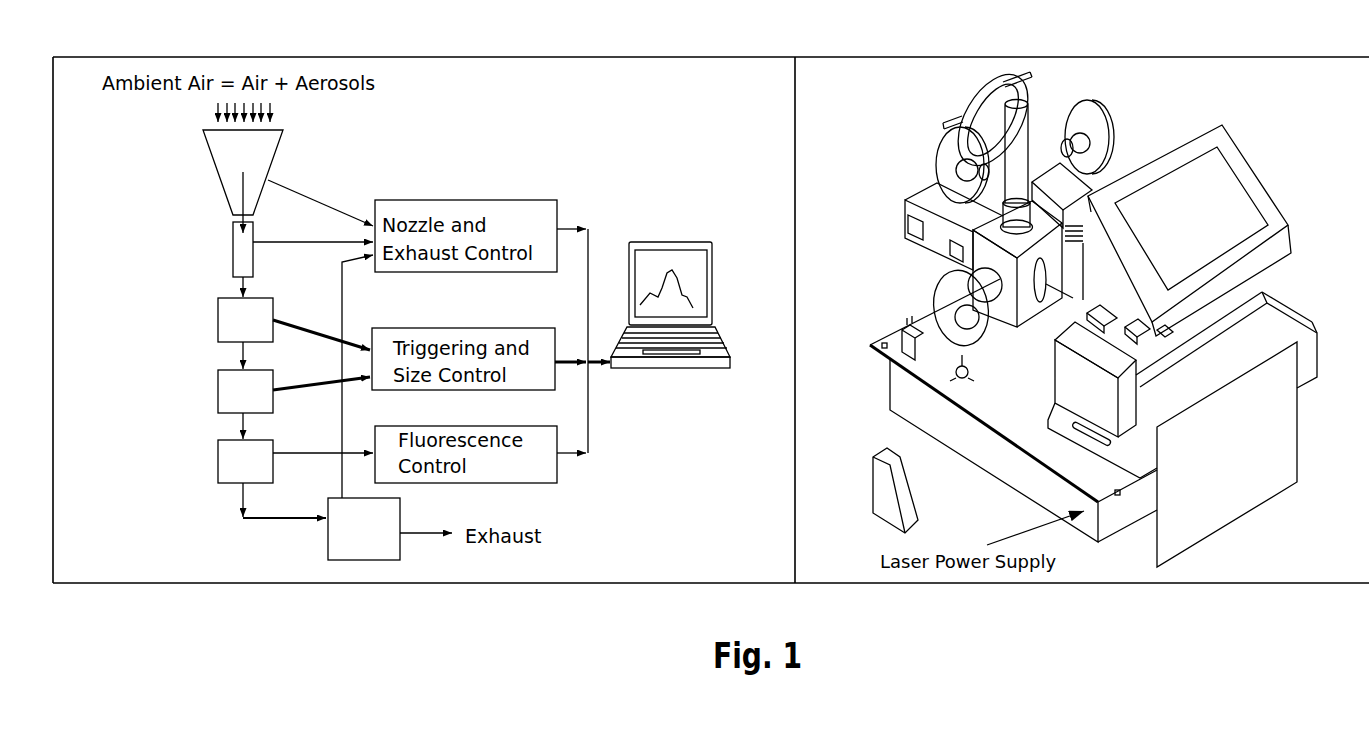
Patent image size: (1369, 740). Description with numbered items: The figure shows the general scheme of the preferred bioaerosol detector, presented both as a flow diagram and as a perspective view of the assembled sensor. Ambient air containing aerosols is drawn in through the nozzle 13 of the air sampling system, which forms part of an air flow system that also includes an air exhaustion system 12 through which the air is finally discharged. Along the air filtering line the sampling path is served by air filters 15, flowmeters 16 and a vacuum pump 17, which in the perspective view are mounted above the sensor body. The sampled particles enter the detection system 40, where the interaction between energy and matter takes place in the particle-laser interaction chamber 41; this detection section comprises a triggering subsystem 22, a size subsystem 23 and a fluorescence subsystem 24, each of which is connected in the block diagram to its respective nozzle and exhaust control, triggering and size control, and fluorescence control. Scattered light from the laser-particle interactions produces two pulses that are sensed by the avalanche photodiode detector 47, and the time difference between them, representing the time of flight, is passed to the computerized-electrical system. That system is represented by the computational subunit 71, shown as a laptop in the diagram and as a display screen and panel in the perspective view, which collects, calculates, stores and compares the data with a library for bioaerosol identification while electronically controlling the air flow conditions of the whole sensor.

The air exhaustion system 12 is at (326, 537).
The nozzle 13 is at (221, 218).
The triggering subsystem 22 is at (216, 328).
The size subsystem 23 is at (216, 388).
The fluorescence subsystem 24 is at (215, 461).
The air filters 15 is at (930, 166).
The flowmeters 16 is at (955, 114).
The vacuum pump 17 is at (1116, 176).
The detection system 40 is at (1008, 306).
The particle-laser interaction chamber 41 is at (1245, 346).
The avalanche photodiode detector 47 is at (918, 244).
The computational subunit 71 is at (663, 375).